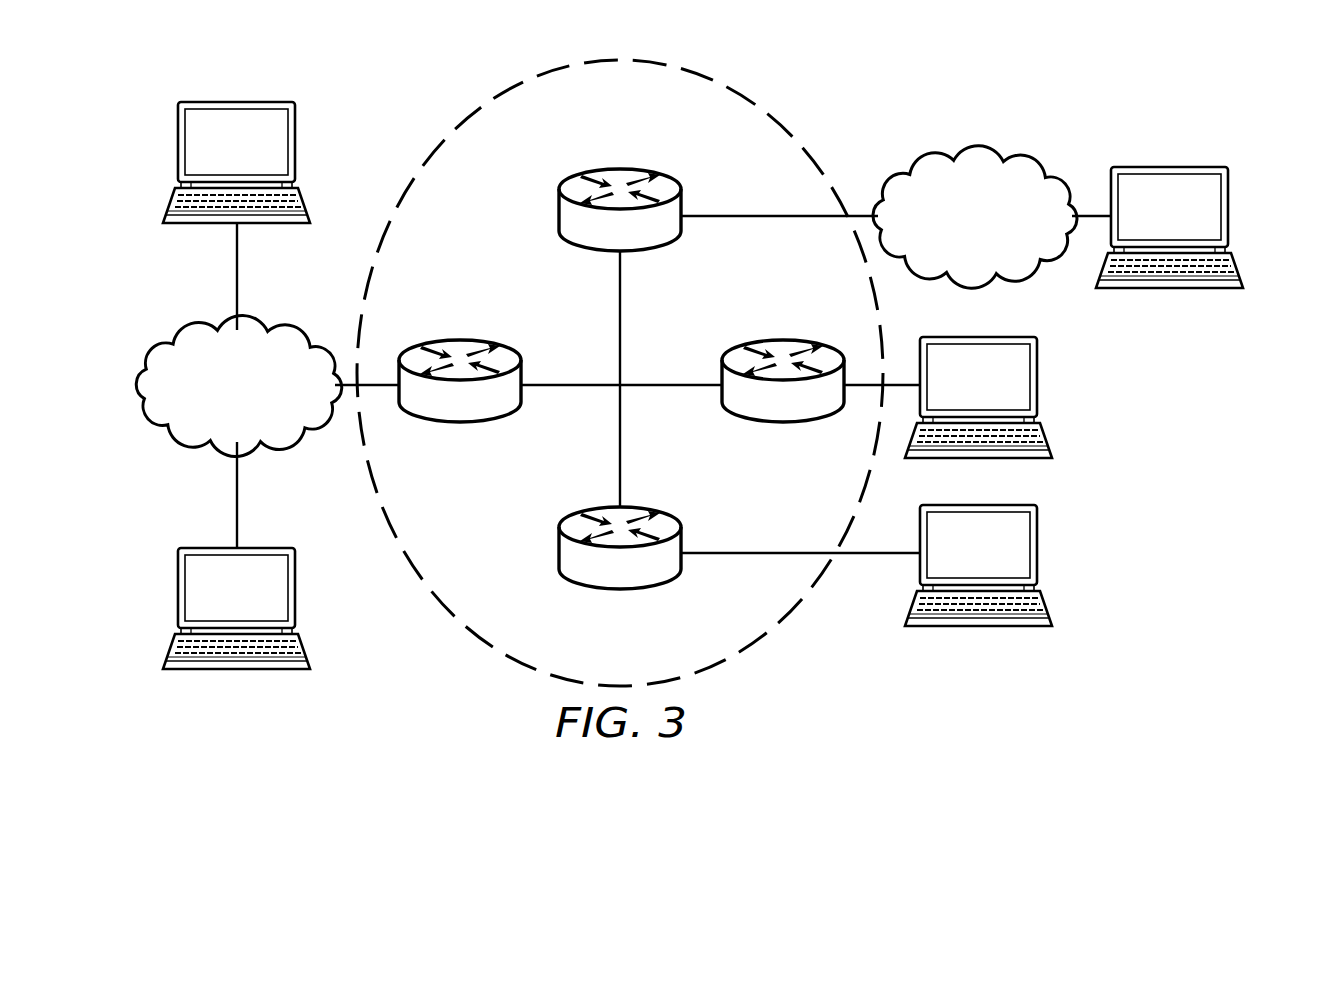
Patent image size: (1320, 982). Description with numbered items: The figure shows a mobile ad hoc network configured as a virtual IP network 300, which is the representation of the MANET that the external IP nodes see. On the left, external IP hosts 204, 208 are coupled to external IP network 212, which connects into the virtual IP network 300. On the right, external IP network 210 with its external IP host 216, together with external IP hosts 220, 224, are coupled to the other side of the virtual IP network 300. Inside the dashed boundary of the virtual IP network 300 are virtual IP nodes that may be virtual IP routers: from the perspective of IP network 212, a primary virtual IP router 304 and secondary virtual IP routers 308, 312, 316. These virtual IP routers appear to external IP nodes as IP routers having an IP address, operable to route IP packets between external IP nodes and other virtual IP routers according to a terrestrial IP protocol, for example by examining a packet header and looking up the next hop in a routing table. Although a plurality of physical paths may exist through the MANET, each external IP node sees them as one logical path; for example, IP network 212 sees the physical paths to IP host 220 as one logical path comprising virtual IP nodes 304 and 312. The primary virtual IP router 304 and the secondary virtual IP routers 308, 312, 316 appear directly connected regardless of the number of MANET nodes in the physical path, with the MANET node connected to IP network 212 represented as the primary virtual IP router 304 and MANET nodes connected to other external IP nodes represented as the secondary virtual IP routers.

The virtual IP network 300 is at (506, 88).
The external IP host 204 is at (177, 140).
The external IP host 208 is at (177, 590).
The external IP network 212 is at (183, 335).
The primary virtual IP router 304 is at (458, 340).
The secondary virtual IP router 308 is at (586, 168).
The secondary virtual IP router 312 is at (781, 340).
The secondary virtual IP router 316 is at (600, 592).
The external IP network 210 is at (1003, 158).
The external IP host 216 is at (1229, 200).
The external IP host 220 is at (1038, 370).
The external IP host 224 is at (1038, 547).